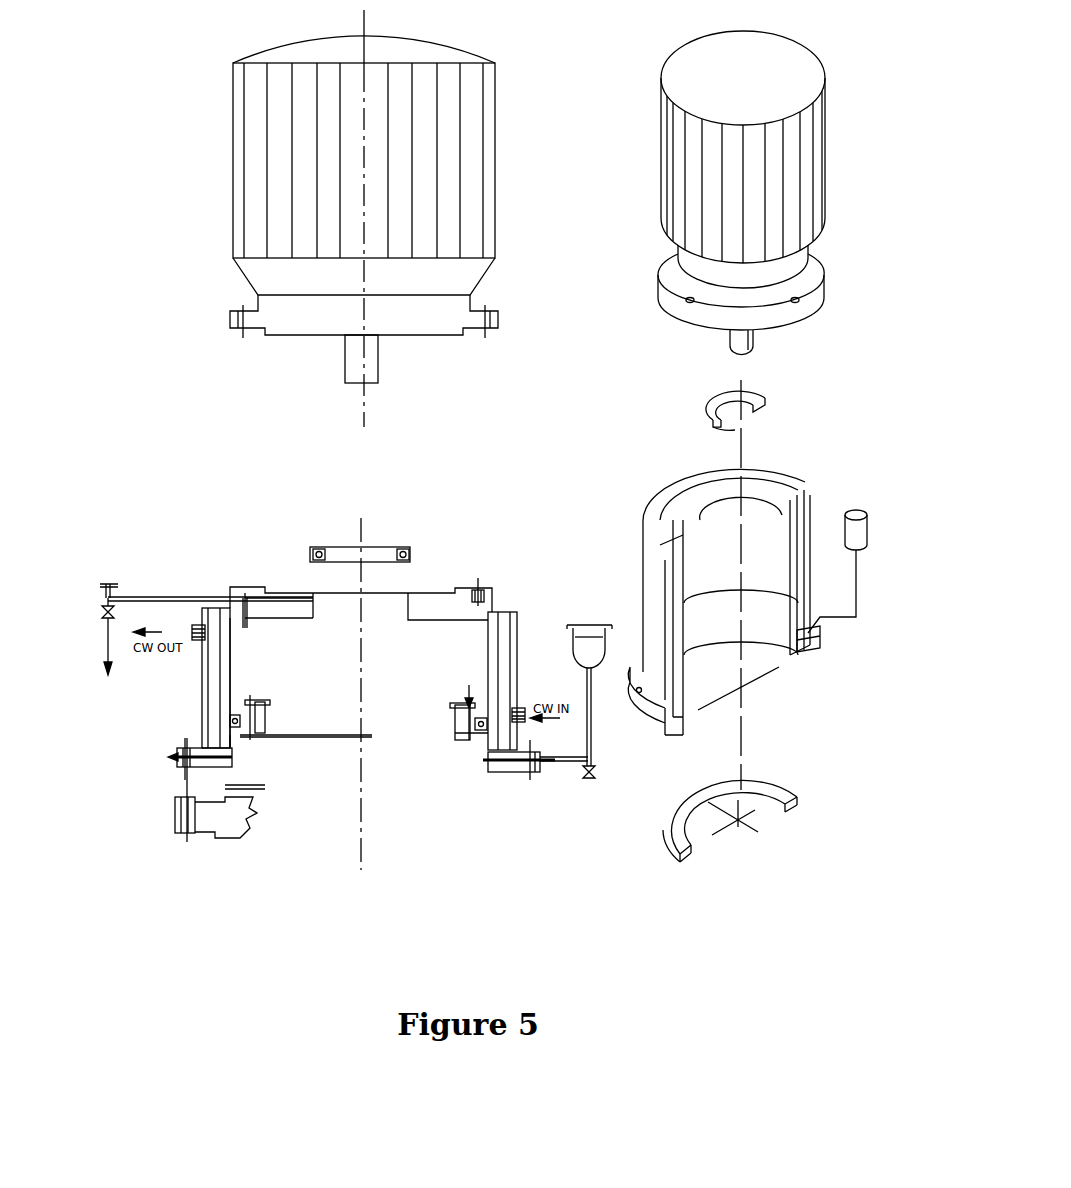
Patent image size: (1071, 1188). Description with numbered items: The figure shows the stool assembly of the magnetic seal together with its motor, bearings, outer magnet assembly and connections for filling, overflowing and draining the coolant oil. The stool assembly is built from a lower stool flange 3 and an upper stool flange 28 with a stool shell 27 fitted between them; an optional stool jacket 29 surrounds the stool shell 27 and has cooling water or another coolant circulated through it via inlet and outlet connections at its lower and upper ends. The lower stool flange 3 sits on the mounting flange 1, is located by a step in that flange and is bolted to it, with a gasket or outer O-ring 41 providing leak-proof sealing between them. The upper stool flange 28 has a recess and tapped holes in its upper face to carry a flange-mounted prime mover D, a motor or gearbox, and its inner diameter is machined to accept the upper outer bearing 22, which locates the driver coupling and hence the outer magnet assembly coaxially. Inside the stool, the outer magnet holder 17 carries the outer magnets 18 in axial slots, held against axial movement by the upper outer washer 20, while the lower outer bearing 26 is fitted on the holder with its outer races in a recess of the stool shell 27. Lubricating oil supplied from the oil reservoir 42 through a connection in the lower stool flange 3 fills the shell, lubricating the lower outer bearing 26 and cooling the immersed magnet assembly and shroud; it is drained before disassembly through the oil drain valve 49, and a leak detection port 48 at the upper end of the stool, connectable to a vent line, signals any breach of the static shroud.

The prime mover D is at (661, 145).
The mounting flange 1 is at (240, 838).
The lower stool flange 3 is at (510, 775).
The outer magnet holder 17 is at (450, 707).
The outer magnets 18 is at (265, 715).
The upper outer washer 20 is at (257, 702).
The upper outer bearing 22 is at (412, 548).
The lower outer bearing 26 is at (232, 722).
The stool shell 27 is at (231, 665).
The upper stool flange 28 is at (492, 590).
The stool jacket 29 is at (200, 677).
The outer O-ring 41 is at (228, 781).
The oil reservoir 42 is at (600, 668).
The leak detection port 48 is at (117, 580).
The oil drain valve 49 is at (592, 778).